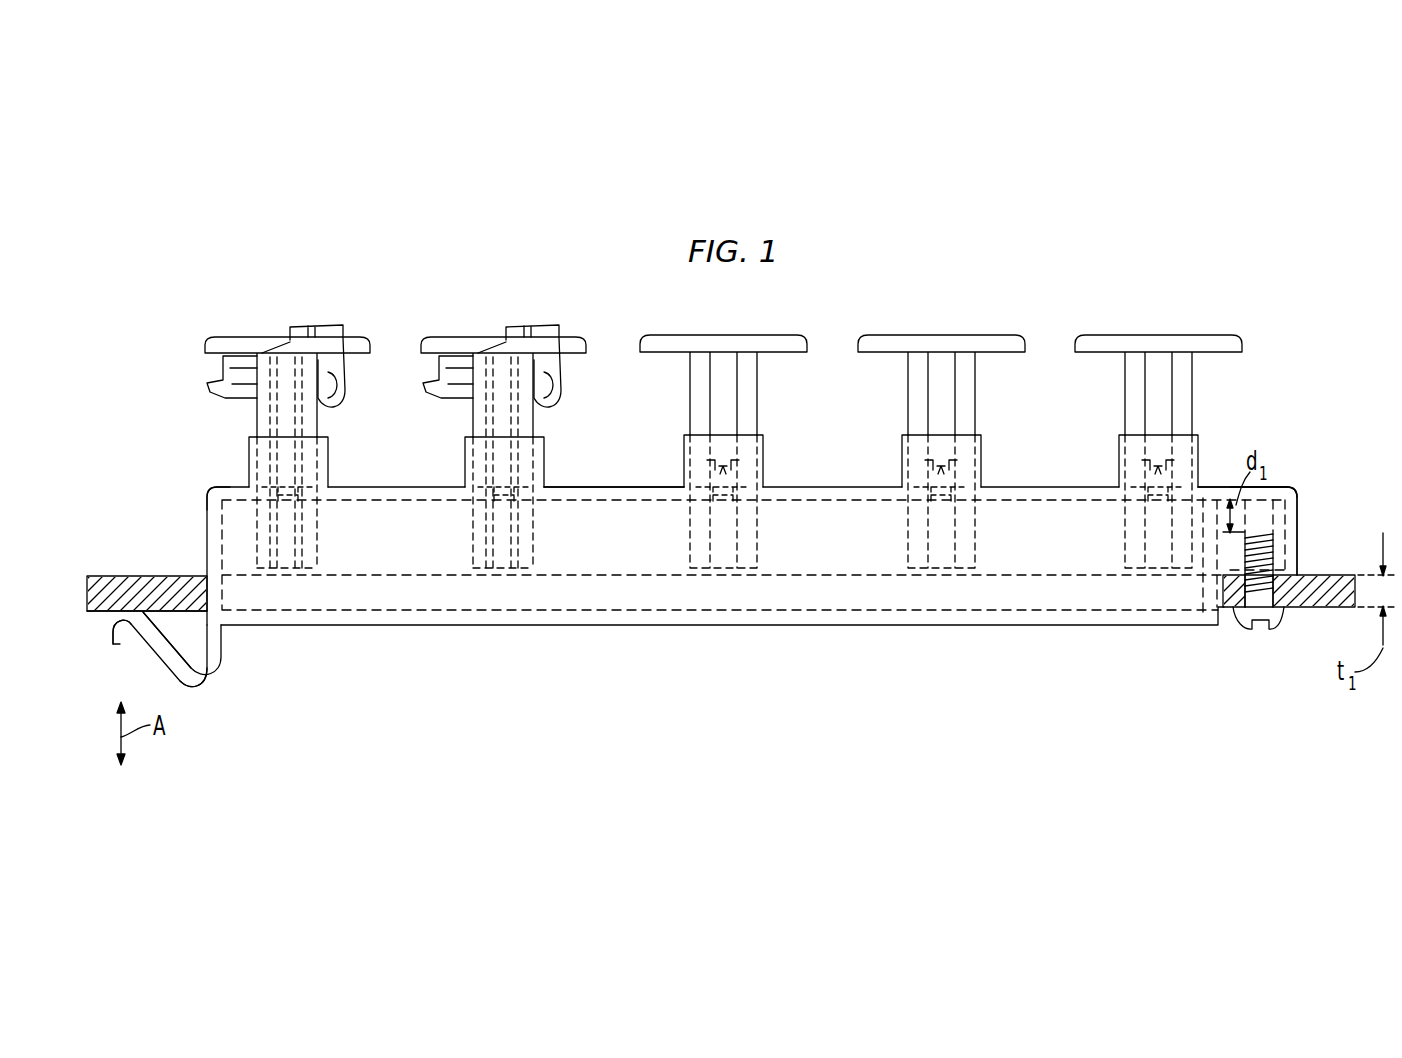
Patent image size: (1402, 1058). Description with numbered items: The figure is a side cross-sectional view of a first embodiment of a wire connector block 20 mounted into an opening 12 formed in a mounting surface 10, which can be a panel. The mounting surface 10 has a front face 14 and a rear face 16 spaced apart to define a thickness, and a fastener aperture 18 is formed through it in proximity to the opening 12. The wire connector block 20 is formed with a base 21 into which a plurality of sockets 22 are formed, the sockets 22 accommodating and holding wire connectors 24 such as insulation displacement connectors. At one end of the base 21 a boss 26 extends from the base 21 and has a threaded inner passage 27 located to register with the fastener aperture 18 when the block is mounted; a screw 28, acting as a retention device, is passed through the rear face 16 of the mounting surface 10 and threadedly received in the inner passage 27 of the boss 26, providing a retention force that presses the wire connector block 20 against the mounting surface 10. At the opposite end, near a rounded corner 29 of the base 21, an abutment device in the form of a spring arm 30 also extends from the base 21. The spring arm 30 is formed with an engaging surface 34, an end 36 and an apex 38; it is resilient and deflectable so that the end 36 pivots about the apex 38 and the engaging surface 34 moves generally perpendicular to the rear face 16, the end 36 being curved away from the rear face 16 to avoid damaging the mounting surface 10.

The mounting surface 10 is at (1325, 577).
The opening 12 is at (583, 590).
The front face 14 is at (140, 575).
The rear face 16 is at (108, 612).
The fastener aperture 18 is at (1271, 601).
The wire connector block 20 is at (1283, 488).
The base 21 is at (625, 515).
The sockets 22 is at (1118, 464).
The wire connectors 24 is at (1113, 335).
The boss 26 is at (1298, 498).
The threaded inner passage 27 is at (1265, 521).
The screw 28 is at (1275, 629).
The rounded corner 29 is at (205, 505).
The spring arm 30 is at (222, 683).
The engaging surface 34 is at (161, 615).
The end 36 is at (118, 645).
The apex 38 is at (208, 691).